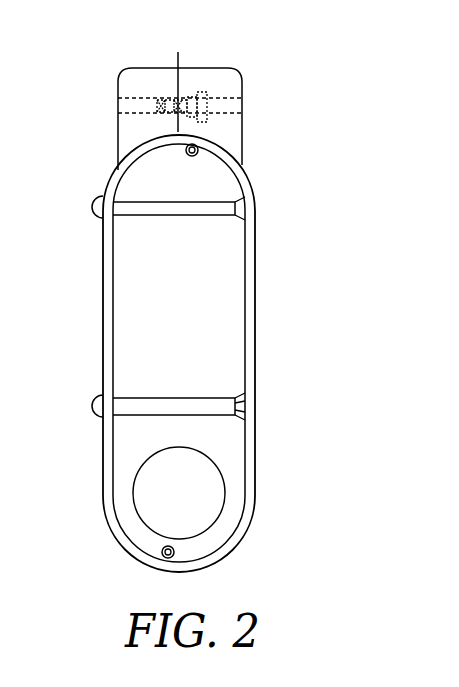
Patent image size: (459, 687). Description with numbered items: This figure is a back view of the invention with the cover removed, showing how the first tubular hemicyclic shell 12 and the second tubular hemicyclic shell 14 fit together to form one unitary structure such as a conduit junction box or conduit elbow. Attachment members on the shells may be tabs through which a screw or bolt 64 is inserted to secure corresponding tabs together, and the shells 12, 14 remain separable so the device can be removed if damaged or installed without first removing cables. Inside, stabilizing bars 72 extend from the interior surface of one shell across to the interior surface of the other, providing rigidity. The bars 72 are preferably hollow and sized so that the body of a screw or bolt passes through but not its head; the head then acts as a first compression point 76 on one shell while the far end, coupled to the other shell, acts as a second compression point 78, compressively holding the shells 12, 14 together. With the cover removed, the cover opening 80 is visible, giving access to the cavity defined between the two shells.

The first tubular hemicyclic shell 12 is at (232, 263).
The second tubular hemicyclic shell 14 is at (130, 288).
The screw or bolt 64 is at (200, 88).
The stabilizing bars 72 is at (218, 200).
The first compression point 76 is at (242, 406).
The second compression point 78 is at (92, 405).
The cover opening 80 is at (228, 312).